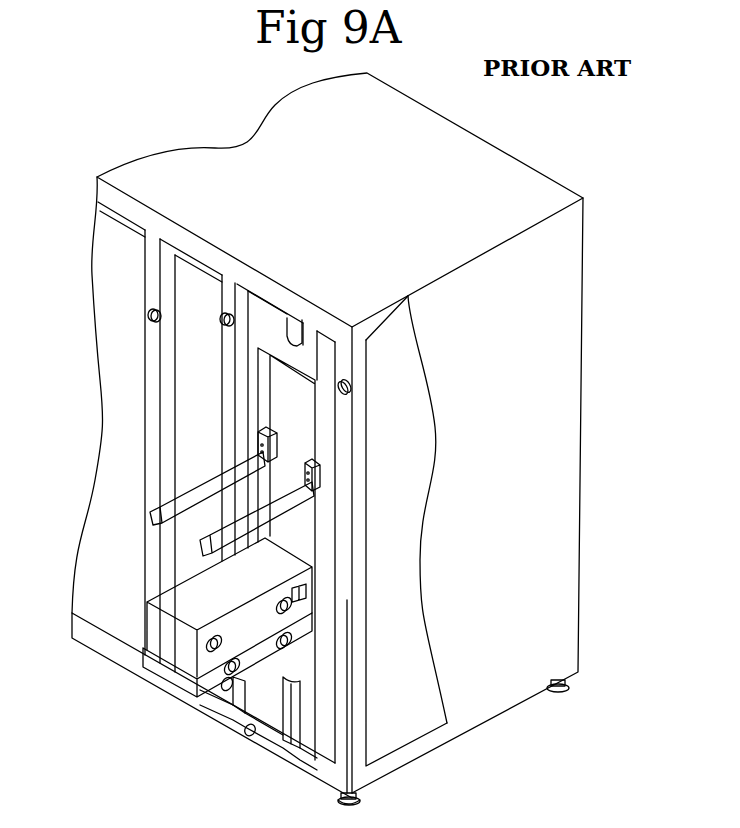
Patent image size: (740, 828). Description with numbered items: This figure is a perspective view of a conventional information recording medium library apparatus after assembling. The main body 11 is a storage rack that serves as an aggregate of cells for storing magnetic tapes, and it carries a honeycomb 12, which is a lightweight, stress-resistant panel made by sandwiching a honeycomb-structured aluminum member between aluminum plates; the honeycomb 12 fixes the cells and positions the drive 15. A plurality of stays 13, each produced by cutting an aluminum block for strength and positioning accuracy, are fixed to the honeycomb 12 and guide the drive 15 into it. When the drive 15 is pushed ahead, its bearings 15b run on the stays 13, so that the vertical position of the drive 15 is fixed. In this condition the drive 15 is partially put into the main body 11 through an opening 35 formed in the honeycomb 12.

The main body 11 is at (410, 763).
The honeycomb 12 is at (276, 338).
The stay 13 is at (255, 640).
The drive 15 is at (142, 632).
The bearings 15b is at (283, 607).
The opening 35 is at (297, 380).